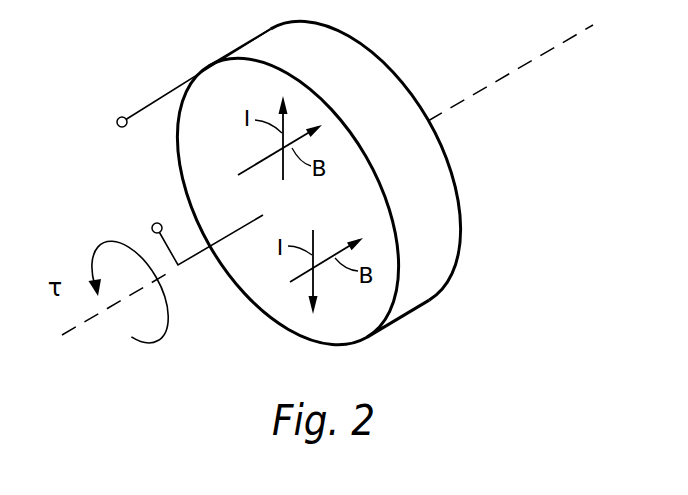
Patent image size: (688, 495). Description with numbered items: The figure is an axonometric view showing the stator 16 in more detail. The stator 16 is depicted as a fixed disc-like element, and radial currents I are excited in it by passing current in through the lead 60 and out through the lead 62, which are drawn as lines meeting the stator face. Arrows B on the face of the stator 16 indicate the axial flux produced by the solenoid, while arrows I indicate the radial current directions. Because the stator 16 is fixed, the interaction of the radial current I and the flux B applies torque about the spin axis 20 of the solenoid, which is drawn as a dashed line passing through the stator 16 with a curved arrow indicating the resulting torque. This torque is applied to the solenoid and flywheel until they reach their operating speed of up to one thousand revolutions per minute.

The stator 16 is at (456, 245).
The spin axis 20 is at (503, 82).
The lead 60 is at (153, 222).
The lead 62 is at (117, 117).